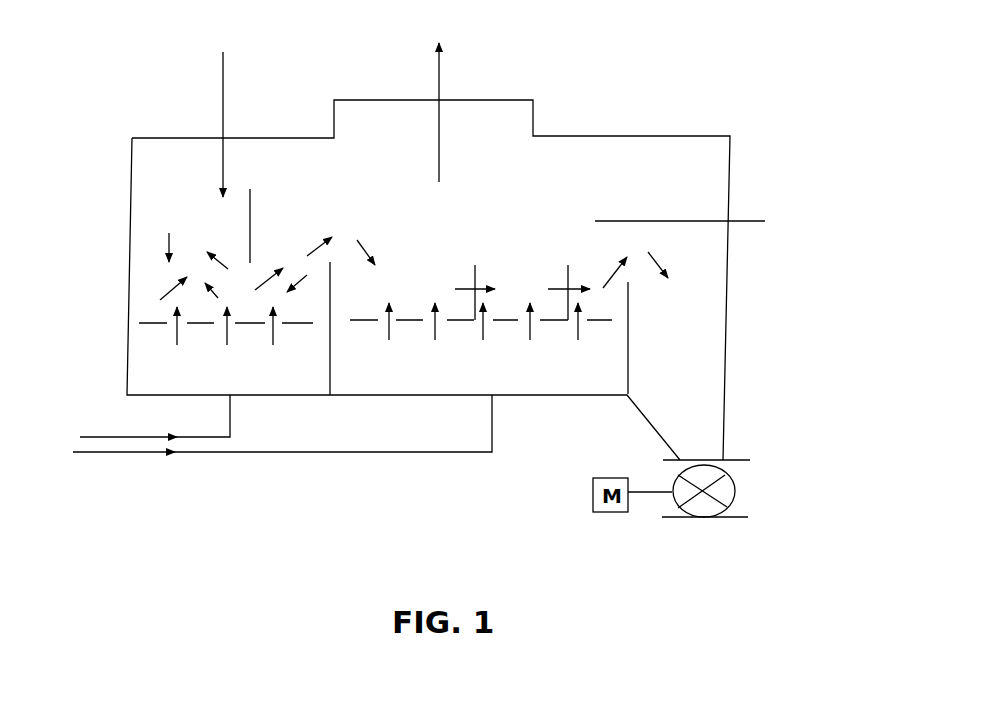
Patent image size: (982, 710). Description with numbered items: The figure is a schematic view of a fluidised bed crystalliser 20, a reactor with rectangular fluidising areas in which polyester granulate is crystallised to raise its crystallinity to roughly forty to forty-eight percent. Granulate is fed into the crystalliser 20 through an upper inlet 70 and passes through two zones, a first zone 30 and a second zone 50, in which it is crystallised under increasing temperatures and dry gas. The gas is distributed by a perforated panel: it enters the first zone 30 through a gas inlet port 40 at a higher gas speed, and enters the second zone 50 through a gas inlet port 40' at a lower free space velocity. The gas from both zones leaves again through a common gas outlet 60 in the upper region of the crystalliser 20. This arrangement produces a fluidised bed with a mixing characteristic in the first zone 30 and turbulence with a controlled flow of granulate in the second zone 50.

The fluidised bed crystalliser 20 is at (730, 183).
The first zone 30 is at (212, 373).
The gas inlet port 40 is at (183, 416).
The gas inlet port 40' is at (282, 423).
The second zone 50 is at (698, 221).
The common gas outlet 60 is at (440, 72).
The feed inlet 70 is at (223, 77).